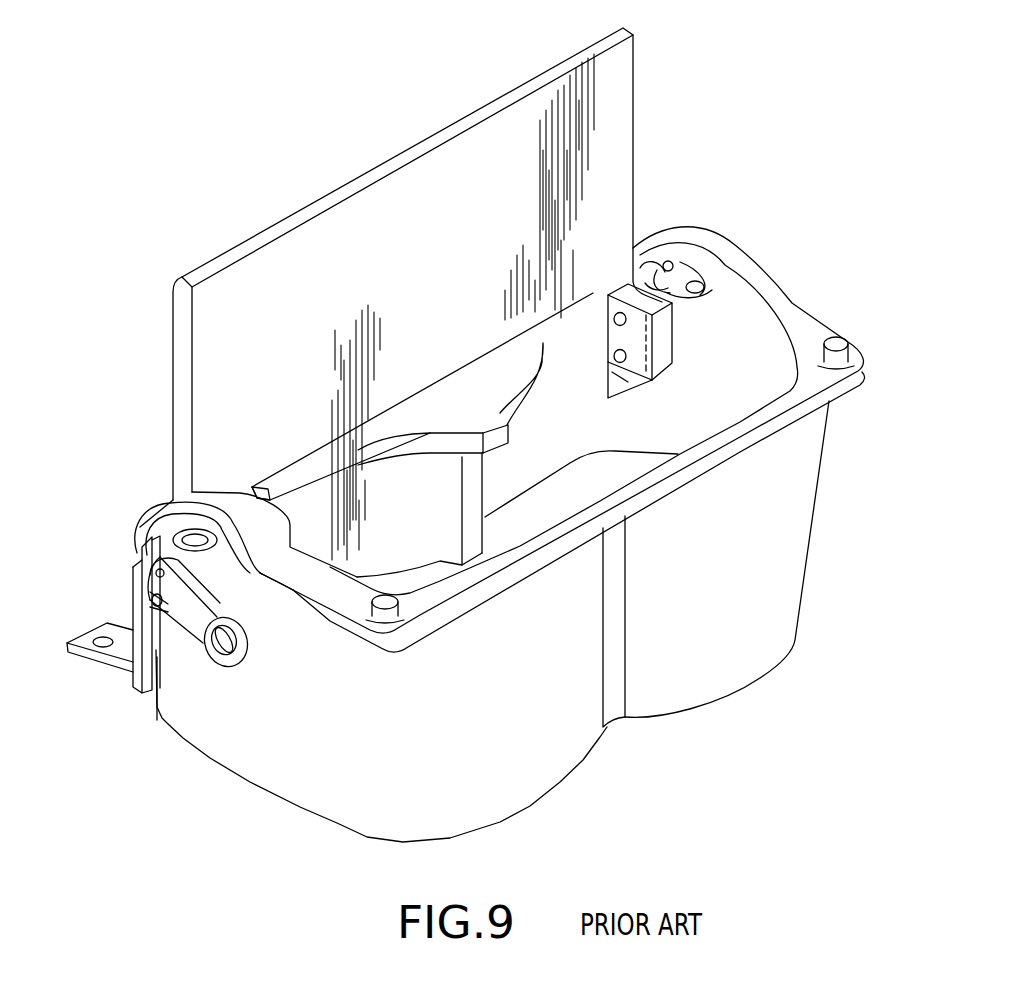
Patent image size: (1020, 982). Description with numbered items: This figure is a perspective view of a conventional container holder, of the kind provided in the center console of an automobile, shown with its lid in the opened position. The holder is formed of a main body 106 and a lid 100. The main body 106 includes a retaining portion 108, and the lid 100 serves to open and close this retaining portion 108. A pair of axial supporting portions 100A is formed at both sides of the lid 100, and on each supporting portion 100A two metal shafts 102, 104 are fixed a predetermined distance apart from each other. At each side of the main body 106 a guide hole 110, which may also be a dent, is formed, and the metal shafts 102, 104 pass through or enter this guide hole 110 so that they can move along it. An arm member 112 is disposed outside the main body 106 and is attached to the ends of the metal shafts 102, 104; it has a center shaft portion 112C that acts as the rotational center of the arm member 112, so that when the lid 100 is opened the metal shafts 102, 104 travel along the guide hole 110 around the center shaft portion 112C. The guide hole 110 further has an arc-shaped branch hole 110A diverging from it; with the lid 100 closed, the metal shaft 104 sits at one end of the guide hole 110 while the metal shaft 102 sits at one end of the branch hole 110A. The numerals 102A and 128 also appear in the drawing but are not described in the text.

The lid 100 is at (617, 165).
The axial supporting portion 100A is at (665, 347).
The metal shaft 102 is at (150, 602).
The mounting foot 102A is at (160, 622).
The metal shaft 104 is at (658, 287).
The main body 106 is at (817, 313).
The retaining portion 108 is at (603, 442).
The guide hole 110 is at (717, 283).
The branch hole 110A is at (677, 270).
The arm member 112 is at (187, 617).
The center shaft portion 112C is at (237, 650).
The pivot 128 is at (150, 580).